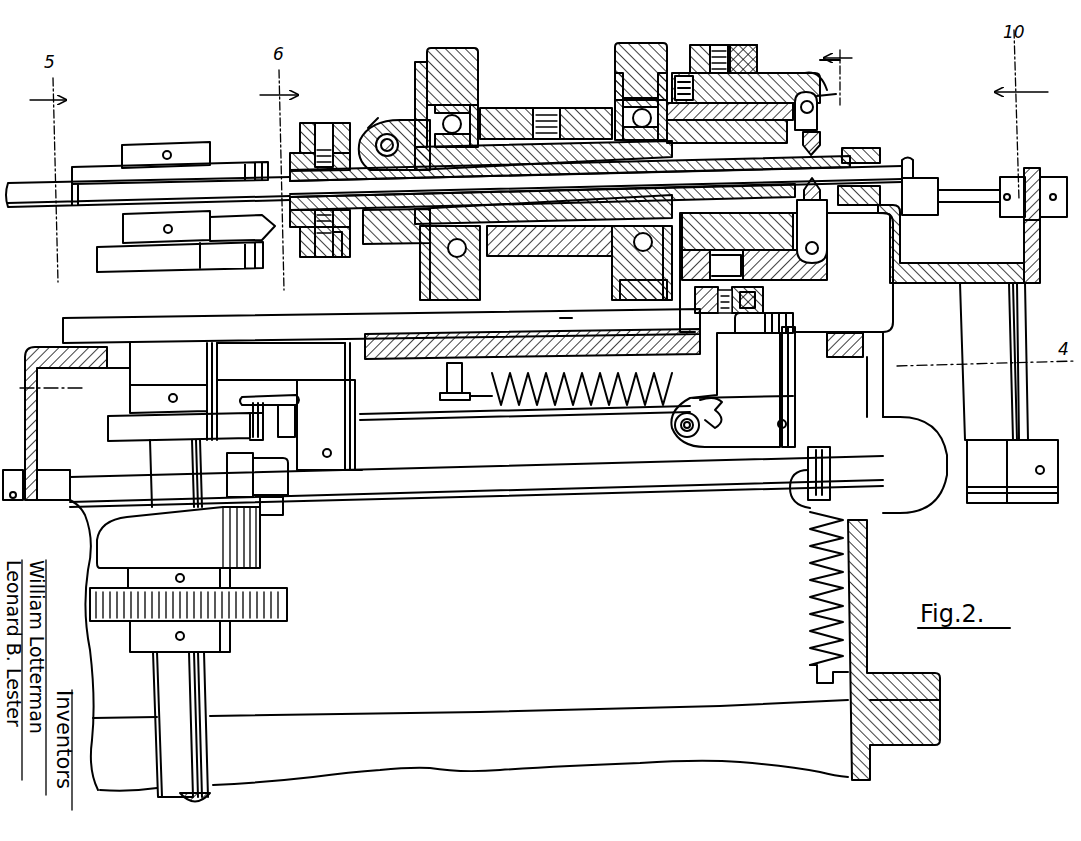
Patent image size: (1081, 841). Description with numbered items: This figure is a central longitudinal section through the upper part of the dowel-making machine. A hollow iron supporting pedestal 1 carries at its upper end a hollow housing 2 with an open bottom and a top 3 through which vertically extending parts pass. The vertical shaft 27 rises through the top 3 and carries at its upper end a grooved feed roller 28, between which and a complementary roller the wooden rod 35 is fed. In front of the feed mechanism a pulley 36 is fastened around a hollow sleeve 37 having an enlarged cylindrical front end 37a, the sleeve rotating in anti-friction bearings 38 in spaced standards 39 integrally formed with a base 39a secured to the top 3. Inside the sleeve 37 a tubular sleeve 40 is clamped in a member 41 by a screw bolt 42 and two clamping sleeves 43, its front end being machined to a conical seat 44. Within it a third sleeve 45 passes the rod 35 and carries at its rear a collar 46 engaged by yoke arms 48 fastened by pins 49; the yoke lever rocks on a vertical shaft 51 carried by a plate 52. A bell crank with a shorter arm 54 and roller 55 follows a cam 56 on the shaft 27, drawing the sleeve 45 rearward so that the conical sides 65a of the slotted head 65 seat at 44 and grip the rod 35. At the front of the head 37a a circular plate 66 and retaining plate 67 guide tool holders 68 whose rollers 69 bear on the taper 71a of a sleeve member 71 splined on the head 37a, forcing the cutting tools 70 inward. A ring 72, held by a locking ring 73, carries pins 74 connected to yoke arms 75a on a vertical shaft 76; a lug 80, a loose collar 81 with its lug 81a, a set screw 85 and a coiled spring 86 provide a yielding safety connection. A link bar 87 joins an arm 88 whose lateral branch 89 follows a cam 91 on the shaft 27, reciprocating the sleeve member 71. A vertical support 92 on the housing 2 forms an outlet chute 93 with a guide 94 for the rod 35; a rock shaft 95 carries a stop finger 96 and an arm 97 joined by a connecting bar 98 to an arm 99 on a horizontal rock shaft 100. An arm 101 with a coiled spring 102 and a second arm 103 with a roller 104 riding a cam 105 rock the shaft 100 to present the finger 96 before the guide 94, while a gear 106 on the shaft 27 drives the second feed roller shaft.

The hollow supporting pedestal 1 is at (872, 770).
The hollow housing 2 is at (862, 610).
The top 3 is at (413, 359).
The vertical shaft 27 is at (208, 690).
The grooved feed roller 28 is at (120, 193).
The cylindrical rod 35 is at (30, 212).
The pulley 36 is at (548, 245).
The hollow sleeve 37 is at (588, 222).
The enlarged cylindrical front end 37a is at (760, 254).
The anti-friction bearings 38 is at (430, 246).
The standards 39 is at (479, 62).
The base 39a is at (567, 320).
The tubular sleeve 40 is at (398, 236).
The clamping member 41 is at (420, 128).
The screw bolt 42 is at (376, 118).
The clamping sleeves 43 is at (387, 133).
The conical seat 44 is at (745, 148).
The third sleeve 45 is at (533, 205).
The collar 46 is at (298, 250).
The yoke arms 48 is at (300, 131).
The pins 49 is at (317, 122).
The vertical shaft 51 is at (343, 254).
The plate 52 is at (242, 330).
The shorter arm 54 is at (230, 232).
The roller 55 is at (218, 254).
The cam 56 is at (108, 270).
The head 65 is at (812, 276).
The conical sides 65a is at (820, 38).
The circular plate 66 is at (790, 252).
The retaining plate 67 is at (820, 108).
The tool holders 68 is at (817, 113).
The roller 69 is at (813, 104).
The cutting tool 70 is at (820, 140).
The sleeve member 71 is at (740, 150).
The taper 71a is at (827, 90).
The ring 72 is at (705, 300).
The locking ring 73 is at (650, 302).
The pins 74 is at (736, 60).
The yoke arms 75a is at (718, 58).
The vertical shaft 76 is at (760, 335).
The lug 80 is at (712, 452).
The collar 81 is at (797, 376).
The lug 81a is at (743, 418).
The set screw 85 is at (678, 435).
The coiled spring 86 is at (612, 402).
The link bar 87 is at (547, 416).
The arm 88 is at (356, 403).
The lateral branch 89 is at (265, 396).
The cam 91 is at (112, 420).
The vertical support 92 is at (953, 342).
The outlet chute 93 is at (994, 361).
The guide 94 is at (862, 152).
The rock shaft 95 is at (972, 200).
The stop finger 96 is at (916, 182).
The arm 97 is at (1009, 177).
The connecting bar 98 is at (1019, 322).
The arm 99 is at (1023, 494).
The horizontal rock shaft 100 is at (520, 490).
The arm 101 is at (812, 472).
The coiled spring 102 is at (812, 548).
The second arm 103 is at (285, 510).
The roller 104 is at (248, 477).
The cam 105 is at (250, 545).
The gear 106 is at (288, 603).